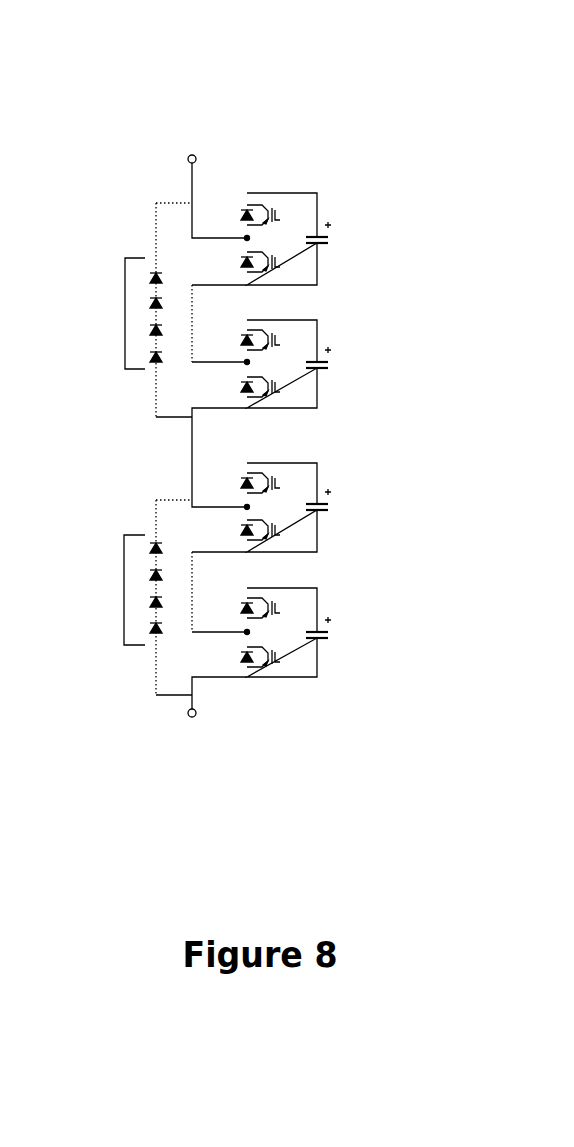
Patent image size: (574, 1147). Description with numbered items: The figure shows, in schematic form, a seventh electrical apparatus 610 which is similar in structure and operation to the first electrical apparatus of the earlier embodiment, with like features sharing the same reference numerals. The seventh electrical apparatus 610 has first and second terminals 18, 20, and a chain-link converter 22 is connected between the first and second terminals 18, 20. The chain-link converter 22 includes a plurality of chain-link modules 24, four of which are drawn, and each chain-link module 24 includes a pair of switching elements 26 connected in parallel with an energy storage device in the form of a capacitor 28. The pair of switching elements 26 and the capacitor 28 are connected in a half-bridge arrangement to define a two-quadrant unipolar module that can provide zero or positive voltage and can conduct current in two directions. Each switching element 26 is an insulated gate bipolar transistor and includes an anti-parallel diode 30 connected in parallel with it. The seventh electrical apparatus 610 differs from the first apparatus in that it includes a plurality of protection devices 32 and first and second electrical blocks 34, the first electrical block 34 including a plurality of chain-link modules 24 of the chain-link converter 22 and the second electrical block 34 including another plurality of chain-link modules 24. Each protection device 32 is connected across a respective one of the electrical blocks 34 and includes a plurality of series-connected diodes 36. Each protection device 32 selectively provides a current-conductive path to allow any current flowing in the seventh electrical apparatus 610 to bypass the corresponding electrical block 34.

The seventh electrical apparatus 610 is at (254, 112).
The first terminal 18 is at (187, 157).
The second terminal 20 is at (187, 716).
The chain-link converter 22 is at (291, 136).
The chain-link module 24 is at (290, 230).
The switching element 26 is at (268, 206).
The capacitor 28 is at (333, 242).
The anti-parallel diode 30 is at (240, 218).
The protection device 32 is at (118, 240).
The electrical block 34 is at (342, 297).
The series-connected diodes 36 is at (125, 310).